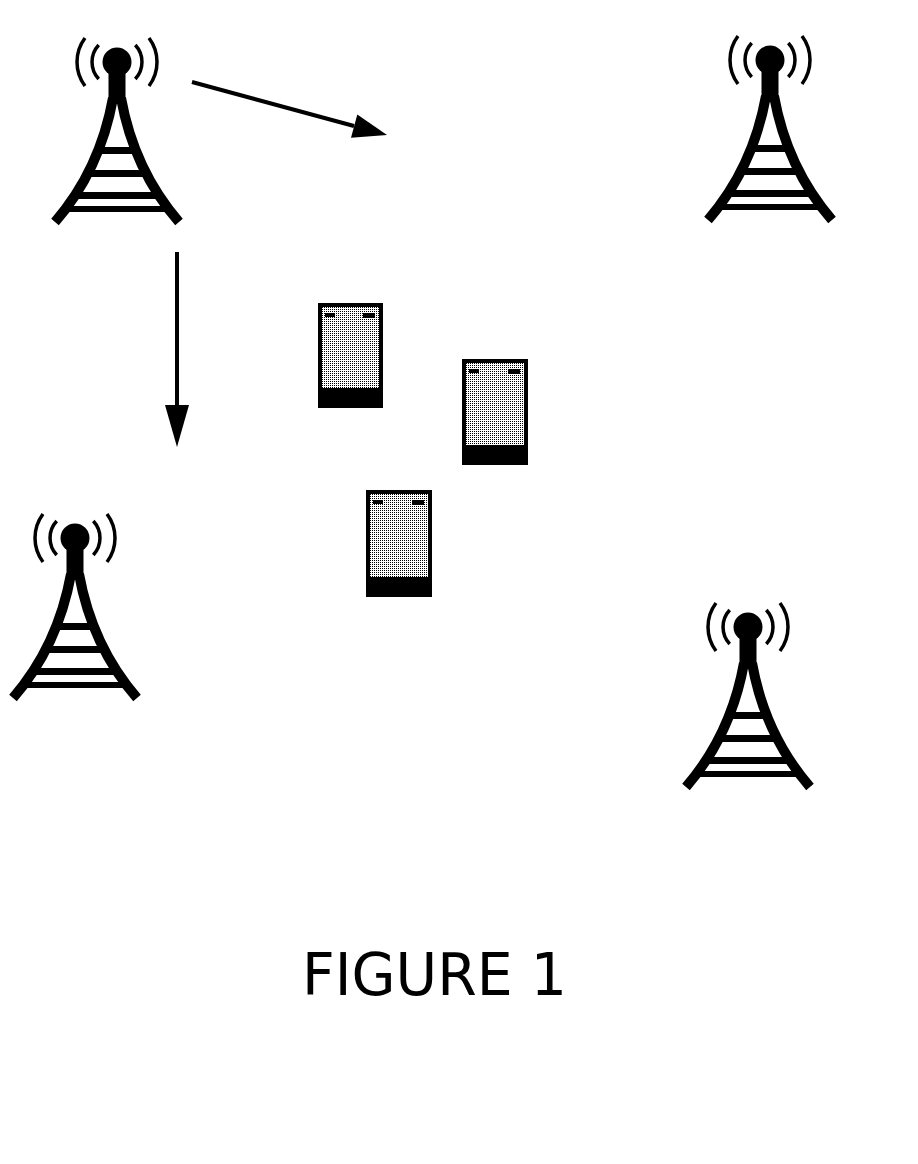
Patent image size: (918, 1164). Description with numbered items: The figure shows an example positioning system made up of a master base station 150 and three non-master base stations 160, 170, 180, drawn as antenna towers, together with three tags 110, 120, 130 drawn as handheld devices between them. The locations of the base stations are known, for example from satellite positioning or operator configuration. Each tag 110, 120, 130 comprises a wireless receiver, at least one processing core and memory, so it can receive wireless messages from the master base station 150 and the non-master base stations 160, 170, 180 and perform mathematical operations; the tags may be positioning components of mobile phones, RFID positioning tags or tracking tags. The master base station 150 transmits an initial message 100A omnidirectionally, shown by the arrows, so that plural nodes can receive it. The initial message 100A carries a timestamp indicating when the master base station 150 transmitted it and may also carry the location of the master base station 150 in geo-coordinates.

The initial message 100A is at (327, 58).
The tag 110 is at (333, 308).
The tag 120 is at (473, 365).
The tag 130 is at (389, 597).
The master base station 150 is at (118, 207).
The non-master base station 160 is at (770, 207).
The non-master base station 170 is at (77, 687).
The non-master base station 180 is at (752, 773).